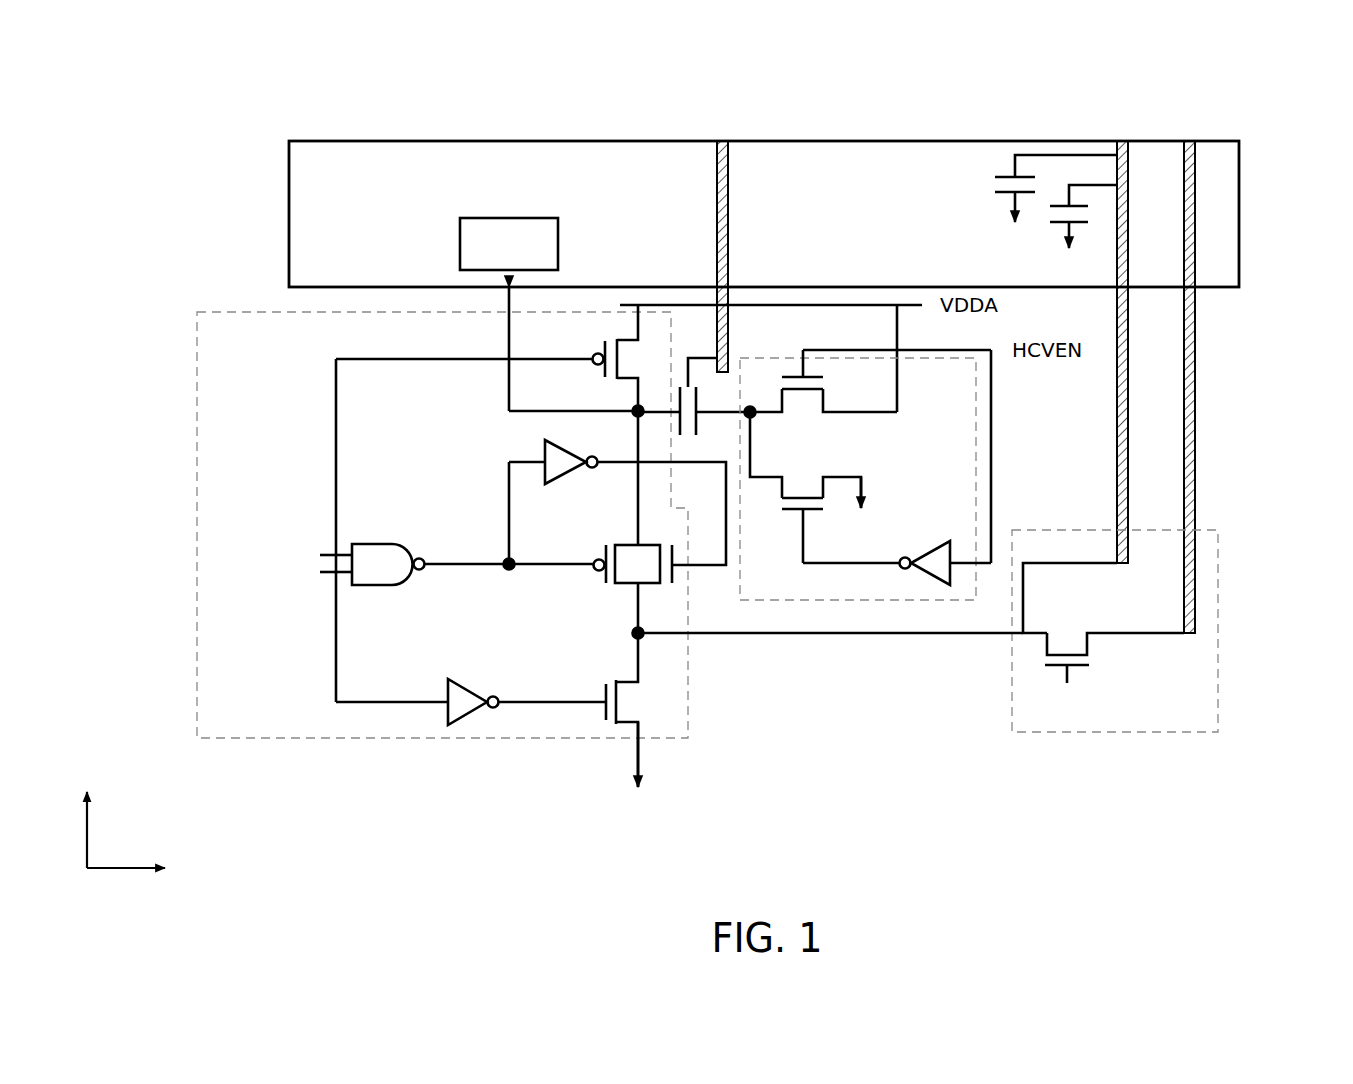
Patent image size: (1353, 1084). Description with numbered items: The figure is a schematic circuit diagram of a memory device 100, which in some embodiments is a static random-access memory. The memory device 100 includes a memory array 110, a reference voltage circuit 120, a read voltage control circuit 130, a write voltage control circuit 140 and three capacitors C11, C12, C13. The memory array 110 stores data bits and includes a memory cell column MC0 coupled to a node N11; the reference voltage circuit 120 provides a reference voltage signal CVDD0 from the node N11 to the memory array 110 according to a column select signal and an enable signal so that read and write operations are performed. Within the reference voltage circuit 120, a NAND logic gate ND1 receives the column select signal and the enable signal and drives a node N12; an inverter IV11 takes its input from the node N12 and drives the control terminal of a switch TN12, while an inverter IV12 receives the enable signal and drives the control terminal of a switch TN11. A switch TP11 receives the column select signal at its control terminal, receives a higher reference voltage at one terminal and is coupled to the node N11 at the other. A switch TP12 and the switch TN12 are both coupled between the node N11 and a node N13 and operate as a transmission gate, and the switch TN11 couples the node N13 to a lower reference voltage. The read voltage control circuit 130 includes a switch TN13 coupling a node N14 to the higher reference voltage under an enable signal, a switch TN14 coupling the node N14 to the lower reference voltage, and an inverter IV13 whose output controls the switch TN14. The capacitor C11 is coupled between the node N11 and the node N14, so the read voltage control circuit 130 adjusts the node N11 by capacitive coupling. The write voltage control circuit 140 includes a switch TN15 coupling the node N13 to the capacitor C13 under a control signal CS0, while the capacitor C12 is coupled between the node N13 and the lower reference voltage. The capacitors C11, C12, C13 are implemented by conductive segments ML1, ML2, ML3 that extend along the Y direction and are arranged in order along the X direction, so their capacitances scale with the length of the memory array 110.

The memory device 100 is at (212, 100).
The memory array 110 is at (1239, 216).
The reference voltage circuit 120 is at (197, 452).
The read voltage control circuit 130 is at (976, 462).
The write voltage control circuit 140 is at (1218, 632).
The memory cell column MC0 is at (485, 257).
The conductive segment ML1 is at (728, 230).
The conductive segment ML2 is at (1128, 422).
The conductive segment ML3 is at (1195, 478).
The capacitor C11 is at (694, 407).
The capacitor C12 is at (1055, 204).
The capacitor C13 is at (1000, 172).
The switch TP11 is at (592, 358).
The switch TP12 is at (628, 585).
The switch TN11 is at (587, 732).
The switch TN12 is at (645, 585).
The switch TN13 is at (823, 381).
The switch TN14 is at (814, 487).
The switch TN15 is at (1113, 641).
The inverter IV11 is at (541, 453).
The inverter IV12 is at (458, 725).
The inverter IV13 is at (932, 586).
The NAND logic gate ND1 is at (404, 585).
The node N11 is at (636, 416).
The node N12 is at (505, 561).
The node N13 is at (613, 633).
The node N14 is at (760, 405).
The reference voltage signal CVDD0 is at (500, 351).
The control signal CS0 is at (1066, 708).